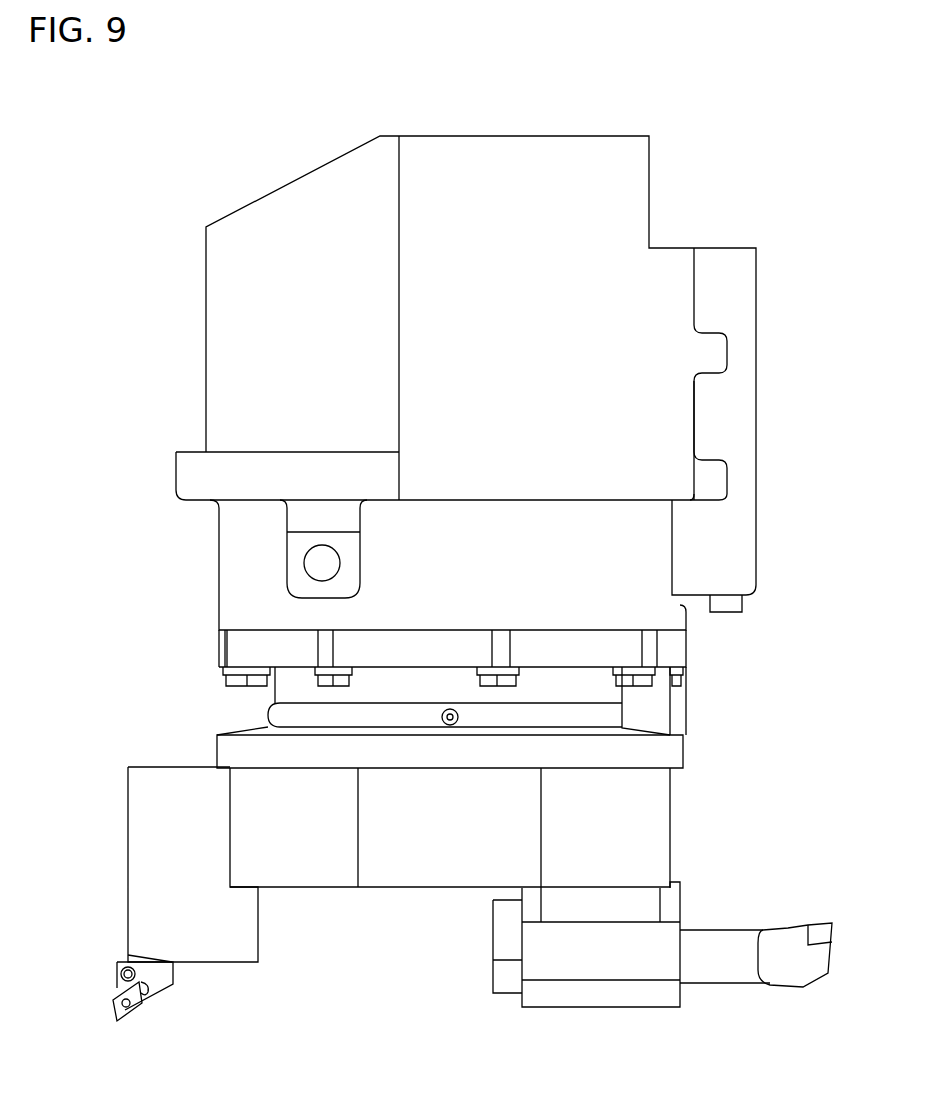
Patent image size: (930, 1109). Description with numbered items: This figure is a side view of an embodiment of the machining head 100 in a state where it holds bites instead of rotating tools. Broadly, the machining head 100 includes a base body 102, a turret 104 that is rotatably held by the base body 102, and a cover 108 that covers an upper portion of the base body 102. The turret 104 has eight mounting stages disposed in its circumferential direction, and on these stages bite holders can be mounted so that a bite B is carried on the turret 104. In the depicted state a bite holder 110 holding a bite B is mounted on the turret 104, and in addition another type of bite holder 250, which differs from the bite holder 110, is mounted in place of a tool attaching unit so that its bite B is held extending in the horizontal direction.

The machining head 100 is at (683, 110).
The cover 108 is at (307, 192).
The base body 102 is at (174, 614).
The turret 104 is at (702, 828).
The bite holder 110 is at (220, 952).
The bite holder 250 is at (598, 1002).
The bite B is at (114, 990).